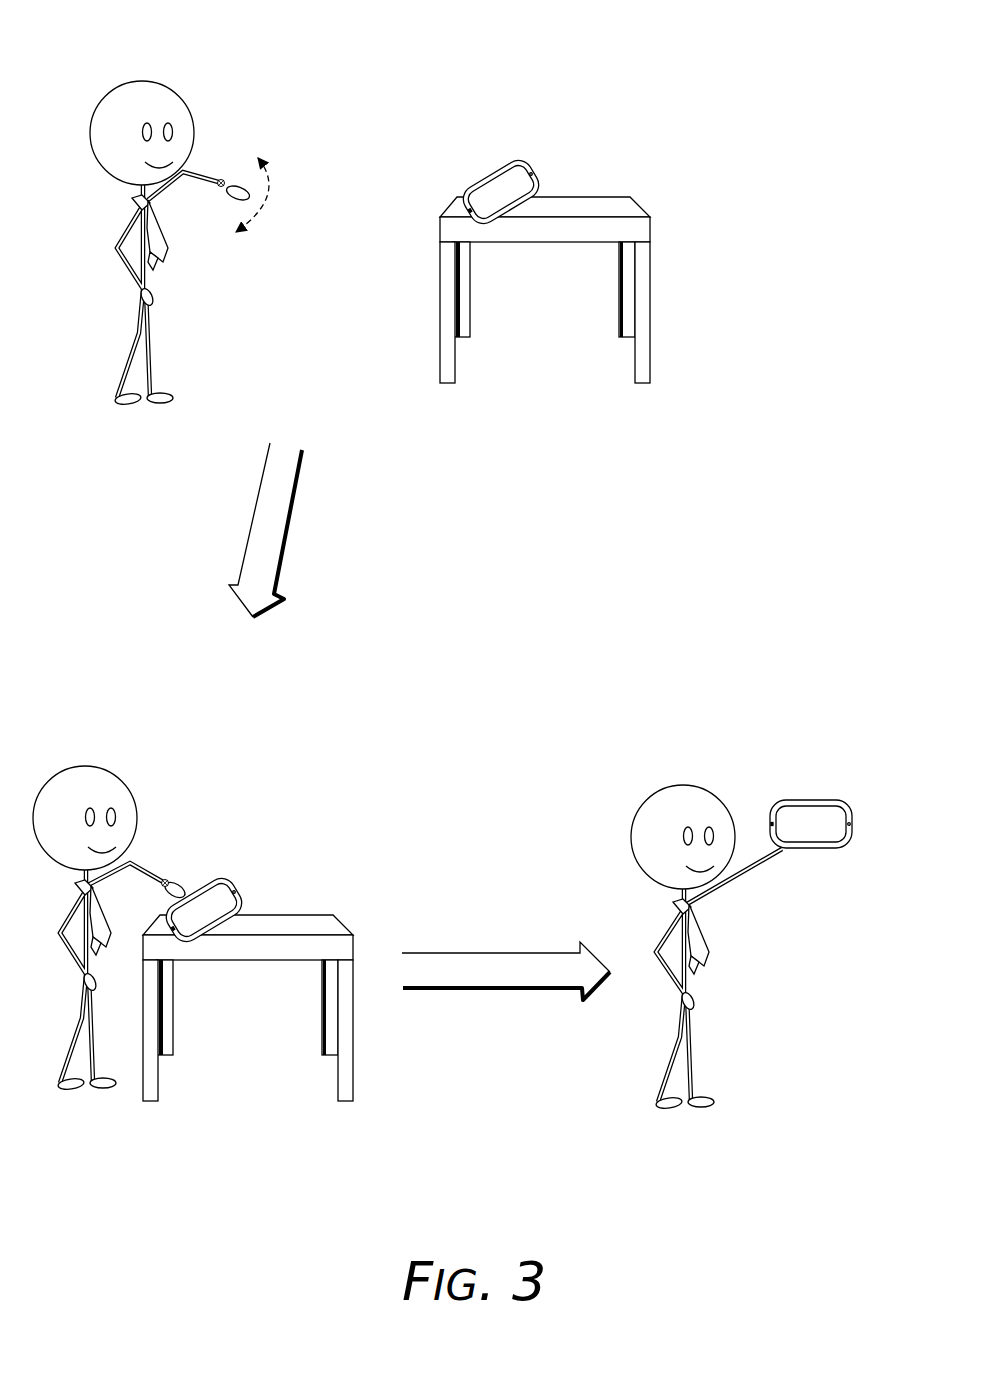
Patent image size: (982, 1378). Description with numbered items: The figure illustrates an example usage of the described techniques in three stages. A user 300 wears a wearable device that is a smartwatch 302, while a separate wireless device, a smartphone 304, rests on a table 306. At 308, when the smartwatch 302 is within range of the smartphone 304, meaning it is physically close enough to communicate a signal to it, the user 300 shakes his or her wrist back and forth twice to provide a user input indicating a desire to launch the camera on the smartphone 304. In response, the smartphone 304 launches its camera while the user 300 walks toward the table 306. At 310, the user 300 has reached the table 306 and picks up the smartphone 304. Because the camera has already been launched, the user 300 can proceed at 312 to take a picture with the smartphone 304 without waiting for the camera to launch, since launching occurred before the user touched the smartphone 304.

The user 300 is at (145, 80).
The smartwatch 302 is at (220, 182).
The smartphone 304 is at (522, 157).
The table 306 is at (628, 197).
The wrist-shake input stage 308 is at (390, 438).
The pickup stage 310 is at (306, 705).
The picture-taking stage 312 is at (728, 683).